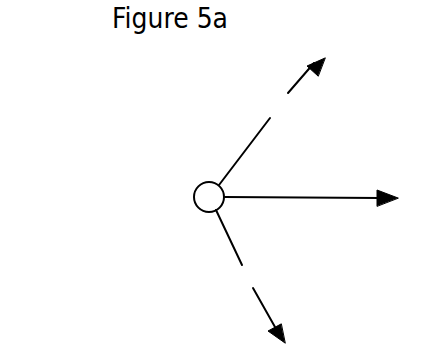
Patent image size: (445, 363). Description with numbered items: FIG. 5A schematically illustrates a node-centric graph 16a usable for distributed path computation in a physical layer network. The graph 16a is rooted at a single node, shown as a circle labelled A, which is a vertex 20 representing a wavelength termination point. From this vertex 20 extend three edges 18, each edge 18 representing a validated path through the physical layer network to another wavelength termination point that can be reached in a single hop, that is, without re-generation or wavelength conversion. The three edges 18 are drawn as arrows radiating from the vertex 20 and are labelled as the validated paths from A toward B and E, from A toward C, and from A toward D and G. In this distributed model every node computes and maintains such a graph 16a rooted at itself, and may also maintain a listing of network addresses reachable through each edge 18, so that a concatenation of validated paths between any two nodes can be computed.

The node-centric graph 16a is at (178, 111).
The edge 18 is at (238, 148).
The vertex 20 is at (199, 210).